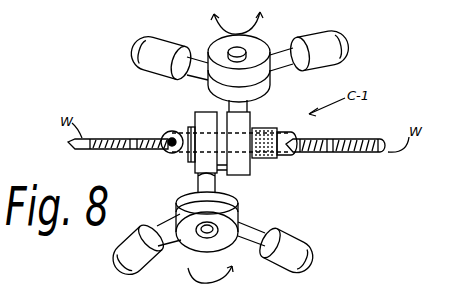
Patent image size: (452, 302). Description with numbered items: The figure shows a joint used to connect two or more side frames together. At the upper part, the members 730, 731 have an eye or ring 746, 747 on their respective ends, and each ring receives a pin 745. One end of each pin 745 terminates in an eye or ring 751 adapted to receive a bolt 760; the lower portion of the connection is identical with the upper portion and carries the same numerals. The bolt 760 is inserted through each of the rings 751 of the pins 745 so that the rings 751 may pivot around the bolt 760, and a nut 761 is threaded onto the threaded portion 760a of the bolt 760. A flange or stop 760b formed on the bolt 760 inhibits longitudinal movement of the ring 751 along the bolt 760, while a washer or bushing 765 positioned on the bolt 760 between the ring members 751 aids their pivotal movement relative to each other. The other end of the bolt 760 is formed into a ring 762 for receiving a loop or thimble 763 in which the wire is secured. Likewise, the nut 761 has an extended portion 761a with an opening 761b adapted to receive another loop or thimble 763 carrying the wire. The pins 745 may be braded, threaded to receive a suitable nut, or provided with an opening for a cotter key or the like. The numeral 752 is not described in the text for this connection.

The member 730 is at (316, 40).
The member 731 is at (155, 45).
The pin 745 is at (237, 46).
The eye or ring 746 is at (256, 50).
The eye or ring 747 is at (263, 92).
The eye or ring 751 is at (200, 118).
The flange pin 752 is at (167, 156).
The bolt 760 is at (238, 158).
The threaded portion 760a is at (277, 158).
The flange or stop 760b is at (186, 168).
The nut 761 is at (283, 134).
The extended portion 761a is at (325, 138).
The opening 761b is at (322, 152).
The ring 762 is at (160, 133).
The loop or thimble 763 is at (142, 136).
The washer or bushing 765 is at (228, 174).